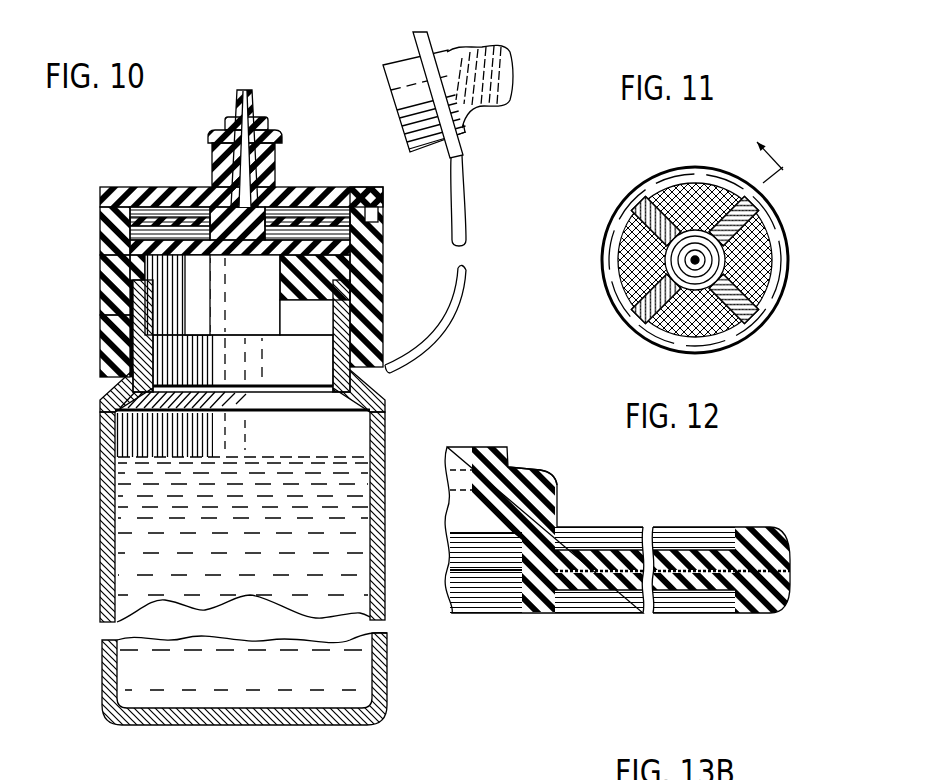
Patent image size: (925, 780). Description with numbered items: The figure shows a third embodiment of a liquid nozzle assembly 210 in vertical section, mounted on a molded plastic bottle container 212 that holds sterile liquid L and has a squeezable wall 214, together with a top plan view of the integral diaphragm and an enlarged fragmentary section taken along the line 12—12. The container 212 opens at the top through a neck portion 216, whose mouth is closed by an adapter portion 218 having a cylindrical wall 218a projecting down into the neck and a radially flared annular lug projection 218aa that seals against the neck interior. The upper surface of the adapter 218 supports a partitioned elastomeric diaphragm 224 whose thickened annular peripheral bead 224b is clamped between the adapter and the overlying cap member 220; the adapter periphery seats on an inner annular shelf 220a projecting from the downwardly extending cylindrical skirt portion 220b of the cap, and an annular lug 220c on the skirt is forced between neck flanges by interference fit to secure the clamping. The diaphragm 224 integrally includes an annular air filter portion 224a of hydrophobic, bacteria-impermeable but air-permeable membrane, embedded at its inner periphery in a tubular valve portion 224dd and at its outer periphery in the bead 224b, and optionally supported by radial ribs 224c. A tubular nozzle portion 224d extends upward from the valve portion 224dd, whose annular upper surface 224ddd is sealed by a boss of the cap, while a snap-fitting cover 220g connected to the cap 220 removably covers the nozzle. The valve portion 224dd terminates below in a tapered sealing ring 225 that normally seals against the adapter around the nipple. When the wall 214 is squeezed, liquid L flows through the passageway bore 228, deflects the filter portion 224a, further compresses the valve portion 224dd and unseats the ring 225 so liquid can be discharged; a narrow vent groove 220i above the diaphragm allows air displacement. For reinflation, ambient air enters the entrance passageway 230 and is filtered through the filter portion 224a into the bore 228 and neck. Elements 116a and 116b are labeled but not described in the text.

In FIG. 10, the nozzle assembly 210 is at (207, 131).
In FIG. 10, the bottle container 212 is at (185, 728).
In FIG. 10, the squeezable wall 214 is at (100, 600).
In FIG. 10, the neck portion 216 is at (100, 400).
In FIG. 10, the adapter portion 218 is at (372, 246).
In FIG. 10, the cylindrical wall 218a is at (378, 278).
In FIG. 10, the annular lug projection 218aa is at (316, 294).
In FIG. 10, the cap member 220 is at (300, 192).
In FIG. 10, the inner annular shelf 220a is at (100, 268).
In FIG. 10, the cylindrical skirt portion 220b is at (105, 312).
In FIG. 10, the annular lug 220c is at (110, 348).
In FIG. 10, the snap-fitting cover 220g is at (513, 77).
In FIG. 10, the vent groove 220i is at (378, 210).
In FIG. 10, the elastomeric diaphragm 224 is at (147, 190).
In FIG. 11, the elastomeric diaphragm 224 is at (666, 173).
In FIG. 12, the elastomeric diaphragm 224 is at (638, 622).
In FIG. 10, the air filter portion 224a is at (183, 190).
In FIG. 11, the air filter portion 224a is at (655, 320).
In FIG. 12, the air filter portion 224a is at (620, 568).
In FIG. 10, the annular peripheral bead 224b is at (100, 194).
In FIG. 11, the annular peripheral bead 224b is at (617, 228).
In FIG. 12, the annular peripheral bead 224b is at (748, 596).
In FIG. 11, the radial ribs 224c is at (742, 312).
In FIG. 12, the radial ribs 224c is at (672, 560).
In FIG. 10, the tubular nozzle portion 224d is at (258, 108).
In FIG. 11, the tubular nozzle portion 224d is at (705, 257).
In FIG. 12, the tubular nozzle portion 224d is at (498, 452).
In FIG. 10, the tubular valve portion 224dd is at (315, 188).
In FIG. 11, the tubular valve portion 224dd is at (725, 268).
In FIG. 12, the tubular valve portion 224dd is at (518, 548).
In FIG. 12, the annular upper surface 224ddd is at (546, 480).
In FIG. 12, the tapered sealing ring 225 is at (548, 600).
In FIG. 10, the passageway bore 228 is at (220, 262).
In FIG. 10, the entrance passageway 230 is at (100, 230).
In FIG. 10, the container neck thread 116a is at (352, 312).
In FIG. 10, the container neck 116b is at (330, 342).
In FIG. 10, the sterile liquid L is at (160, 530).
In FIG. 11, the section line 12— 12 is at (712, 262).